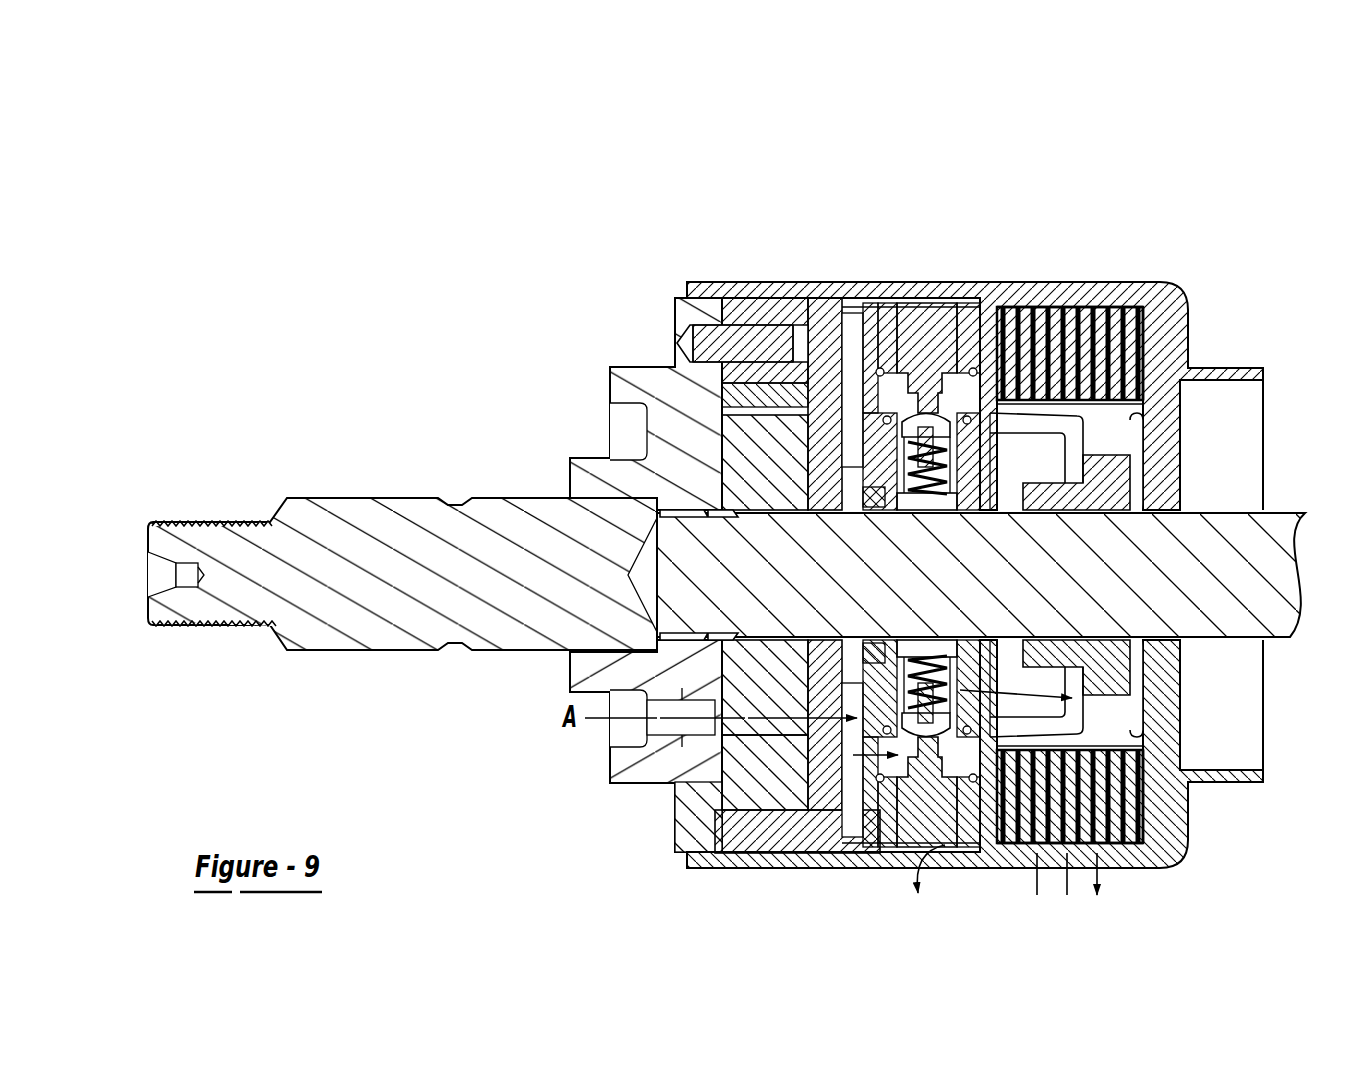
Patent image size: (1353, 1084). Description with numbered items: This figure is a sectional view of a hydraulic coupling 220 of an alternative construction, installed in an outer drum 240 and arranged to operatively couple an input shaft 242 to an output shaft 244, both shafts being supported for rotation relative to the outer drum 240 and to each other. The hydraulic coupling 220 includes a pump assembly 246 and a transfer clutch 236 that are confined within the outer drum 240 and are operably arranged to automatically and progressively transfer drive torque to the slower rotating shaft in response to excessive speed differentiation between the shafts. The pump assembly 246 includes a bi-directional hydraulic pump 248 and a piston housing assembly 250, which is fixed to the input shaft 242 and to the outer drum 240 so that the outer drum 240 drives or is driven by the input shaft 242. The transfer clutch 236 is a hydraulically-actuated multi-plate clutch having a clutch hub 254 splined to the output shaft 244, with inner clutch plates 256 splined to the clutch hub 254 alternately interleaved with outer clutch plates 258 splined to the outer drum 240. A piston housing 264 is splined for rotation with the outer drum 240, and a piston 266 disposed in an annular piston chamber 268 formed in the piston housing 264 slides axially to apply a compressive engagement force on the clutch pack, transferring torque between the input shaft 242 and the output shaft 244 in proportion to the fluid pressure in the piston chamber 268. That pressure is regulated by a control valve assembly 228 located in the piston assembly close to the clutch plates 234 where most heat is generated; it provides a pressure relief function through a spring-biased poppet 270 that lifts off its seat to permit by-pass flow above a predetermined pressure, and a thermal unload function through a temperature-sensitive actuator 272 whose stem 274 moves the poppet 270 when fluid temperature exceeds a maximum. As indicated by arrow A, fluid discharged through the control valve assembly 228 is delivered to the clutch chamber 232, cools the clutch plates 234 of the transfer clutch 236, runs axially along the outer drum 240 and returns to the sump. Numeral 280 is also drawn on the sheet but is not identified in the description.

The hydraulic coupling 220 is at (585, 350).
The control valve assembly 228 is at (910, 323).
The clutch chamber 232 is at (1148, 700).
The clutch plates 234 is at (1151, 781).
The transfer clutch 236 is at (1133, 860).
The outer drum 240 is at (1063, 297).
The input shaft 242 is at (350, 508).
The output shaft 244 is at (1240, 625).
The pump assembly 246 is at (753, 447).
The bi-directional hydraulic pump 248 is at (727, 437).
The piston housing assembly 250 is at (820, 357).
The clutch hub 254 is at (1112, 430).
The inner clutch plates 256 is at (1145, 332).
The outer clutch plates 258 is at (1112, 307).
The piston housing 264 is at (758, 312).
The piston 266 is at (864, 358).
The piston chamber 268 is at (855, 390).
The poppet 270 is at (934, 517).
The temperature-sensitive actuator 272 is at (937, 505).
The stem 274 is at (880, 513).
The valve 280 is at (858, 353).